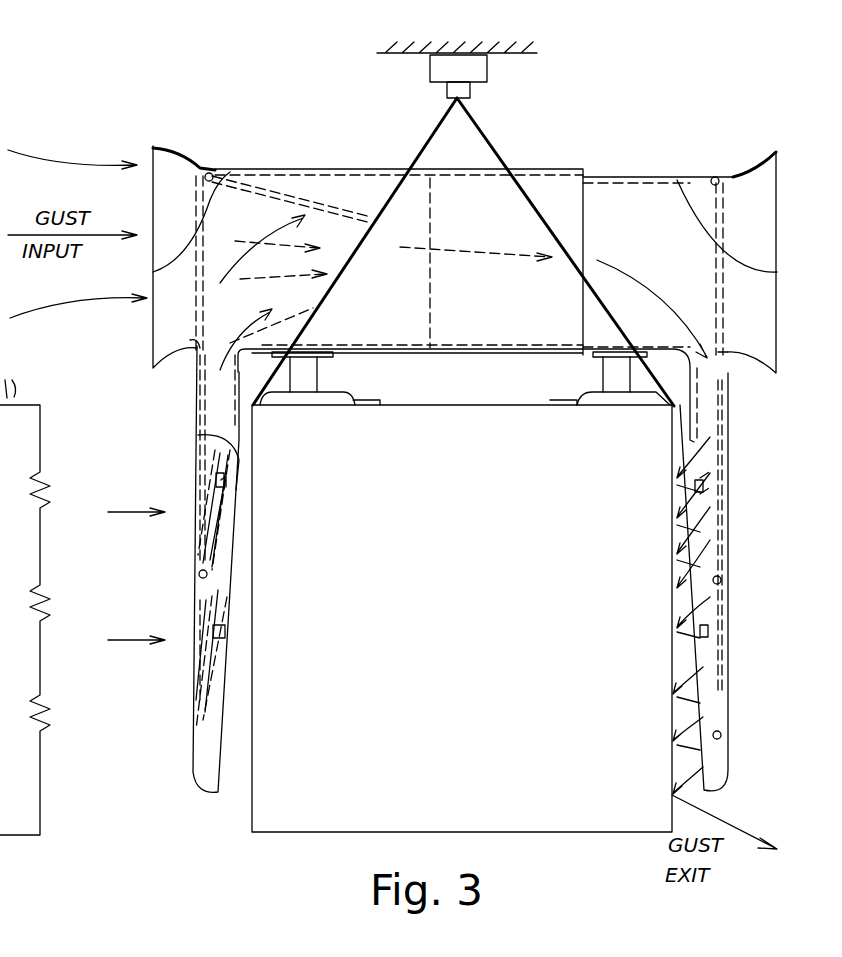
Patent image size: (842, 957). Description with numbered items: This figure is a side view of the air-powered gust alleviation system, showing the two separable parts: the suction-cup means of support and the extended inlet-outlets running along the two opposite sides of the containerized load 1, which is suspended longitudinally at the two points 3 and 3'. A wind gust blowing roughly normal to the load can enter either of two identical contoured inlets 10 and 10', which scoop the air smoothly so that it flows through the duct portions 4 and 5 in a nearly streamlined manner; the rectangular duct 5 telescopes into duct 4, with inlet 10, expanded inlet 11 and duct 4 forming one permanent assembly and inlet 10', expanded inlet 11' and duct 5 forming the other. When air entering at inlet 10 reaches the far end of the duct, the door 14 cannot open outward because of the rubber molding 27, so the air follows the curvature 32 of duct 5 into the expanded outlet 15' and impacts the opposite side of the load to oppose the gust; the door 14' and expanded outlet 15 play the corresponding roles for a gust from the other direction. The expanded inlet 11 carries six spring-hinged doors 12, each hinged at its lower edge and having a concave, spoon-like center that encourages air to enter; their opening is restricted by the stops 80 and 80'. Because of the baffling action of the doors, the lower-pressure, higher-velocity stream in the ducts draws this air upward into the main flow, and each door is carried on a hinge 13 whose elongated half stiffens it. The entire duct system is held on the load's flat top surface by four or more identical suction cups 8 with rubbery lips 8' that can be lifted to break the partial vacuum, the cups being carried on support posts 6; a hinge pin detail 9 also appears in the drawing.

The housing box 1 is at (288, 838).
The suspension point 3 is at (463, 252).
The suspension point 3' is at (446, 81).
The duct portion 4 is at (290, 170).
The duct portion 5 is at (655, 180).
The support post 6 is at (602, 372).
The suction cup 8 is at (465, 378).
The lip 8' is at (465, 390).
The hinge 9 is at (210, 172).
The inlet 10 is at (165, 257).
The inlet 10' is at (754, 262).
The expanded inlet 11 is at (199, 569).
The expanded inlet / outlet 11' is at (728, 582).
The spring-hinged door 12 is at (216, 478).
The hinge 13 is at (198, 575).
The door 14 is at (151, 263).
The door 14' is at (771, 269).
The expanded outlet 15 is at (244, 616).
The expanded outlet 15' is at (669, 615).
The rubber molding 27 is at (195, 348).
The curvature 32 is at (467, 395).
The stop 80 is at (455, 502).
The stop 80' is at (458, 657).